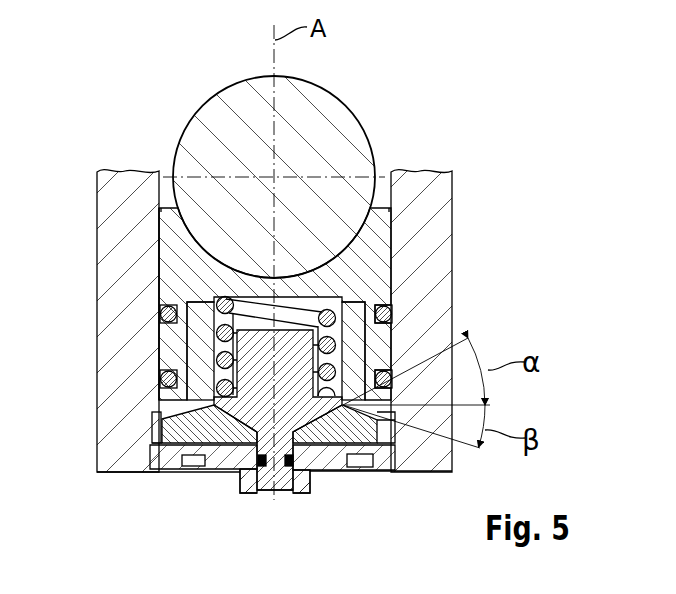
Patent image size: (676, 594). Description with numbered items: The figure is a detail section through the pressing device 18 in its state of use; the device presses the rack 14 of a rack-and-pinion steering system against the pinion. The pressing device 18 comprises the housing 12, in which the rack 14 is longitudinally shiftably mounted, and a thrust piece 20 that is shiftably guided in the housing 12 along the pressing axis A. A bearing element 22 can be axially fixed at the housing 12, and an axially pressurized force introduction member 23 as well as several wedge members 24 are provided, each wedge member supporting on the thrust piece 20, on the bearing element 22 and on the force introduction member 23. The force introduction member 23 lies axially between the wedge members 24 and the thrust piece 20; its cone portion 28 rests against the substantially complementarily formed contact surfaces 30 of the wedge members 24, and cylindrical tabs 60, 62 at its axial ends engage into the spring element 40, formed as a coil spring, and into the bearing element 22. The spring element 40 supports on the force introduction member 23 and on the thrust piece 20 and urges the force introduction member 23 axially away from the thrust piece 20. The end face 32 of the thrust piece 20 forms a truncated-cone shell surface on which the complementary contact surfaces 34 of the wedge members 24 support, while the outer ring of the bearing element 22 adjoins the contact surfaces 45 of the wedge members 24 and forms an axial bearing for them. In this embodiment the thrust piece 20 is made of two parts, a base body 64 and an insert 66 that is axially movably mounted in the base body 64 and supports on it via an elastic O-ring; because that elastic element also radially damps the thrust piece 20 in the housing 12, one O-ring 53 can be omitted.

The housing 12 is at (445, 222).
The rack 14 is at (343, 113).
The pressing device 18 is at (440, 117).
The thrust piece 20 is at (362, 271).
The bearing element 22 is at (232, 462).
The force introduction member 23 is at (302, 362).
The wedge members 24 is at (169, 433).
The cone portion 28 is at (307, 412).
The contact surfaces 30 is at (330, 413).
The end face 32 is at (175, 410).
The contact surfaces 34 is at (344, 424).
The spring element 40 is at (192, 342).
The contact surfaces 45 is at (196, 447).
The O-ring 53 is at (162, 312).
The cylindrical tab 60 is at (270, 475).
The cylindrical tab 62 is at (290, 376).
The base body 64 is at (173, 253).
The insert 66 is at (190, 318).